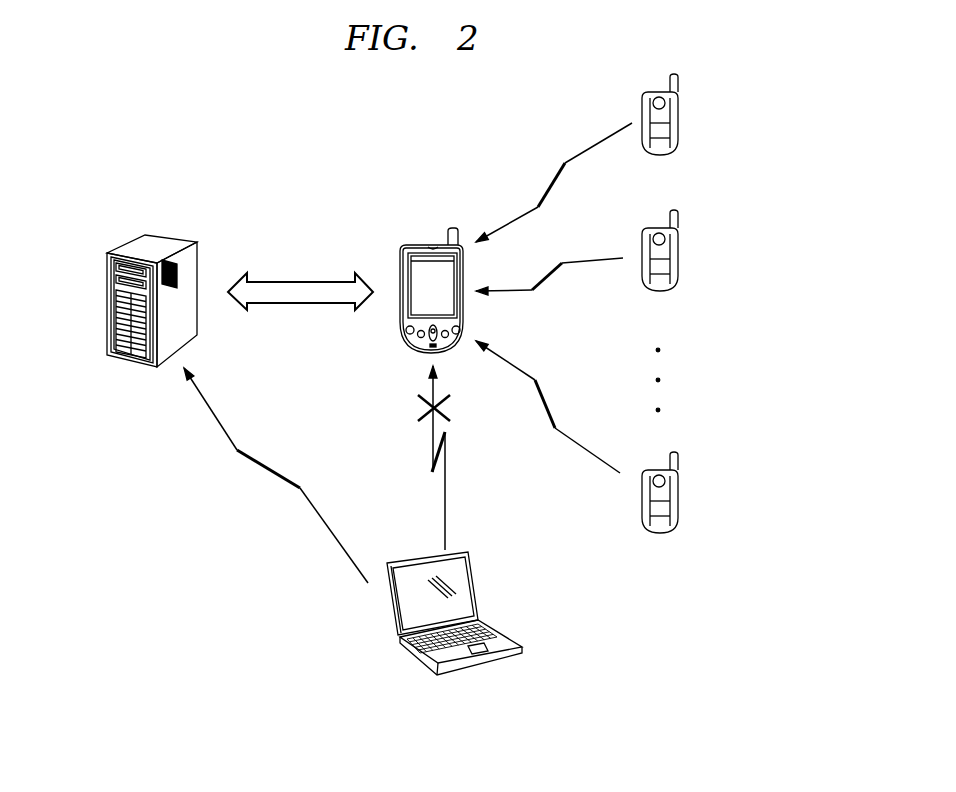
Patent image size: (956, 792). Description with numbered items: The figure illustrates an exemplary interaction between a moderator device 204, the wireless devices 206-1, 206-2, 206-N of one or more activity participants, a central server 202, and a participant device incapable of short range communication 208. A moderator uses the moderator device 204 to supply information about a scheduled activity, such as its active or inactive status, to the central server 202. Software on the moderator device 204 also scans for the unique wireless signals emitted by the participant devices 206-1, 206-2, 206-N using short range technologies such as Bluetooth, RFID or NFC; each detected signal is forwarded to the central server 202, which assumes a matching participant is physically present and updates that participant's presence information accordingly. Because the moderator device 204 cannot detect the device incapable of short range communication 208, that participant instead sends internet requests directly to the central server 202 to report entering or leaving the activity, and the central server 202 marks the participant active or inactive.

The central server 202 is at (143, 243).
The moderator device 204 is at (418, 246).
The wireless device of an activity participant 206-1 is at (680, 122).
The wireless device of an activity participant 206-2 is at (680, 258).
The wireless device of an activity participant 206-N is at (680, 502).
The wireless device incapable of short range communication 208 is at (465, 590).